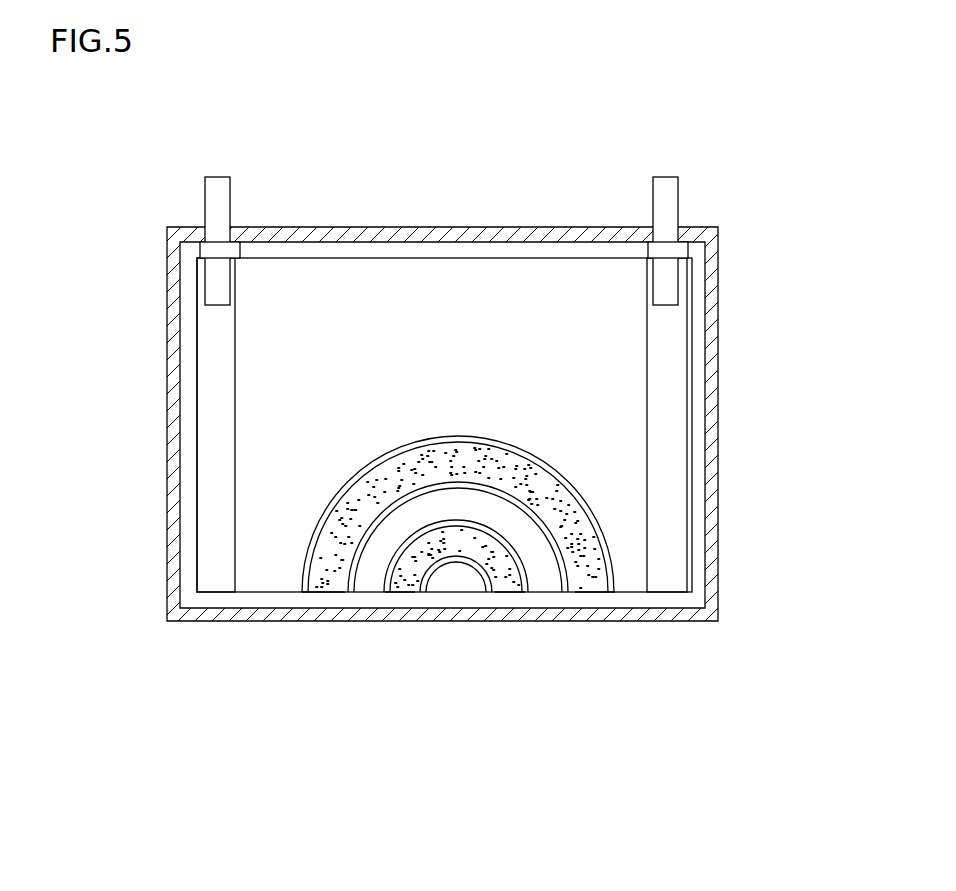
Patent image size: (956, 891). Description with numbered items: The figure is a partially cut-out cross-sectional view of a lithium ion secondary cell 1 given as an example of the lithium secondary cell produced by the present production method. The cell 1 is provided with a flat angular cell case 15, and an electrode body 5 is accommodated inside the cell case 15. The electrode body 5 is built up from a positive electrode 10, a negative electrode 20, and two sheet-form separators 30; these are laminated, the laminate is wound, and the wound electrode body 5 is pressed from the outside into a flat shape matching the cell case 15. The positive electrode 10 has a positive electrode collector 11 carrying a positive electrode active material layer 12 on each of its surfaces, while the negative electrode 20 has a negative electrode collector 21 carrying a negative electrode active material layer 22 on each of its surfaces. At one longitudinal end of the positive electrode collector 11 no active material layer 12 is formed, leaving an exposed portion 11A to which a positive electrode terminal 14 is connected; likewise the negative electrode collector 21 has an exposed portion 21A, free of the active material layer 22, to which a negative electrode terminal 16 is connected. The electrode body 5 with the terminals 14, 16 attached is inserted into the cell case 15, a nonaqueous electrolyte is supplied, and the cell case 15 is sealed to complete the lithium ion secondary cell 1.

The lithium ion secondary cell 1 is at (443, 401).
The electrode body 5 is at (540, 293).
The positive electrode 10 is at (465, 598).
The positive electrode collector 11 is at (543, 535).
The exposed portion of the positive electrode collector 11A is at (213, 423).
The positive electrode active material layer 12 is at (583, 577).
The positive electrode terminal 14 is at (232, 197).
The cell case 15 is at (720, 508).
The negative electrode terminal 16 is at (680, 182).
The negative electrode 20 is at (456, 640).
The negative electrode collector 21 is at (440, 578).
The exposed portion of the negative electrode collector 21A is at (668, 412).
The negative electrode active material layer 22 is at (457, 550).
The separator 30 is at (368, 573).